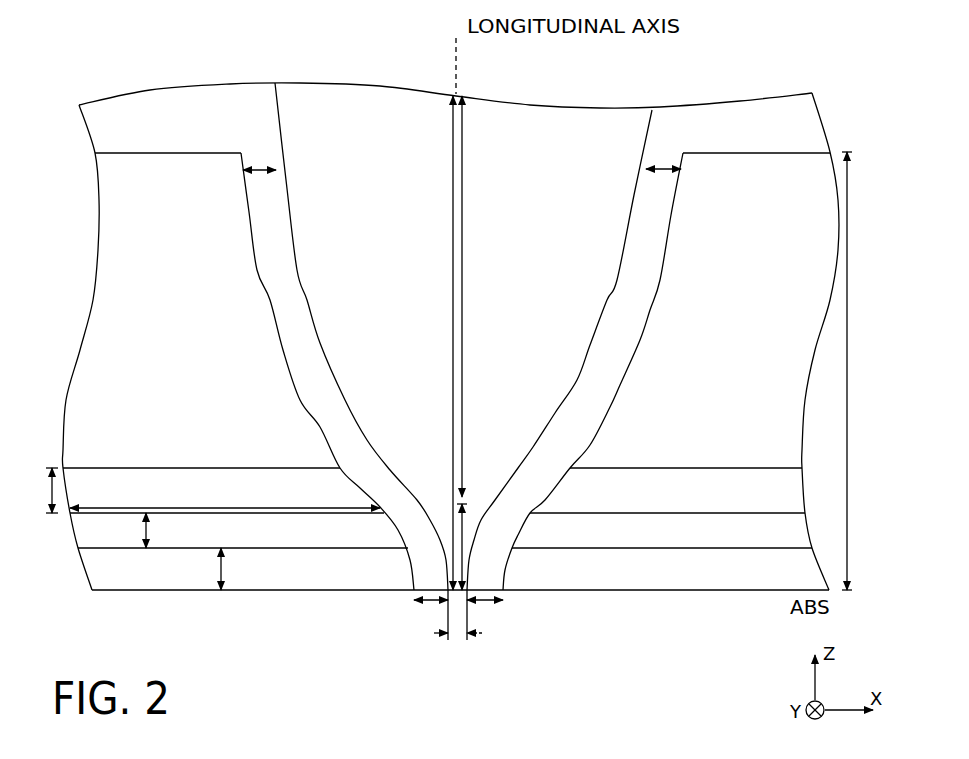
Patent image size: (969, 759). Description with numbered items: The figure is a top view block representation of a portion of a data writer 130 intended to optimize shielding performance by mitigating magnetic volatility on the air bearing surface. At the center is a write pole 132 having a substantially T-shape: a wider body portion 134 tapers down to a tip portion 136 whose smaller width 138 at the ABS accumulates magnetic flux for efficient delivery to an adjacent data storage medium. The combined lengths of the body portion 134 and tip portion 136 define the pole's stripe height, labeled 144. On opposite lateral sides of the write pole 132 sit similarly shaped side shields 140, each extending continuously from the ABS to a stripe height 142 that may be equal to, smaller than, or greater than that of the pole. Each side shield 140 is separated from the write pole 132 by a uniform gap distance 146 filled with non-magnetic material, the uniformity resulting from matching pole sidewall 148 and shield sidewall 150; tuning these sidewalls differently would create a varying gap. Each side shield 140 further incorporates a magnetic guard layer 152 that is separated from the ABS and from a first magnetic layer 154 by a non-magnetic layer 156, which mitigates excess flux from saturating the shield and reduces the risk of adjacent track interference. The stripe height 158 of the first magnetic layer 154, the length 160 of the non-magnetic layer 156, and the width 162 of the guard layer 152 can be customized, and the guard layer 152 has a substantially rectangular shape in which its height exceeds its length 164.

The data writer 130 is at (113, 68).
The write pole 132 is at (637, 139).
The body portion 134 is at (463, 283).
The tip portion 136 is at (465, 528).
The width 138 is at (442, 623).
The side shields 140 is at (92, 311).
The stripe height 142 is at (864, 371).
The write pole stripe height 144 is at (452, 311).
The gap distance 146 is at (463, 396).
The pole sidewall 148 is at (306, 298).
The shield sidewall 150 is at (255, 265).
The magnetic guard layer 152 is at (285, 466).
The first magnetic layer 154 is at (395, 580).
The non-magnetic layer 156 is at (178, 365).
The stripe height 158 is at (239, 569).
The length 160 is at (165, 530).
The width 162 is at (225, 497).
The length 164 is at (38, 490).